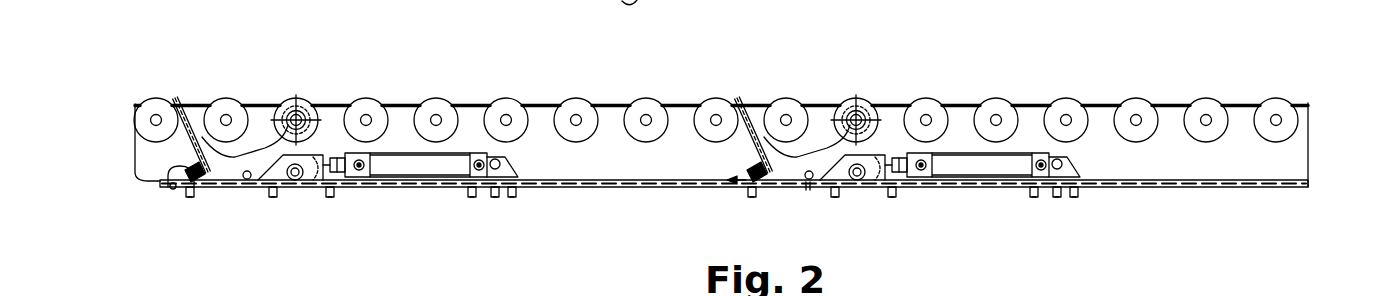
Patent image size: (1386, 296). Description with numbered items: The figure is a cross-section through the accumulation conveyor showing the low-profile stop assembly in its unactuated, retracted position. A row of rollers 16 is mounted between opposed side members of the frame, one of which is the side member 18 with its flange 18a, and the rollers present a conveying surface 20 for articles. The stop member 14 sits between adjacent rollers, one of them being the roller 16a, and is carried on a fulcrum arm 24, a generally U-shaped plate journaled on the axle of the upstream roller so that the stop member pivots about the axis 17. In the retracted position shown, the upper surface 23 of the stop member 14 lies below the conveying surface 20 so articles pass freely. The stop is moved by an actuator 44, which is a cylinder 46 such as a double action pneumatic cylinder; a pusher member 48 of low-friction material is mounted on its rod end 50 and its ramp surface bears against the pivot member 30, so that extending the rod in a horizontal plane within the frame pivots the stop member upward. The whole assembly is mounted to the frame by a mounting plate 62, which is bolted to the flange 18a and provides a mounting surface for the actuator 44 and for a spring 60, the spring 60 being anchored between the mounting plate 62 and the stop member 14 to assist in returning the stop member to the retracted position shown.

The stop member 14 is at (179, 101).
The rollers 16 is at (632, 97).
The roller 16a is at (443, 98).
The axis 17 is at (297, 118).
The side member 18 is at (1308, 143).
The flange 18a is at (613, 183).
The conveying surface 20 is at (233, 100).
The upper surface 23 is at (740, 102).
The fulcrum arm 24 is at (828, 140).
The pivot member 30 is at (203, 140).
The actuator 44 is at (484, 212).
The cylinder 46 is at (420, 168).
The pusher member 48 is at (275, 182).
The rod end 50 is at (334, 188).
The spring 60 is at (170, 176).
The mounting plate 62 is at (808, 188).